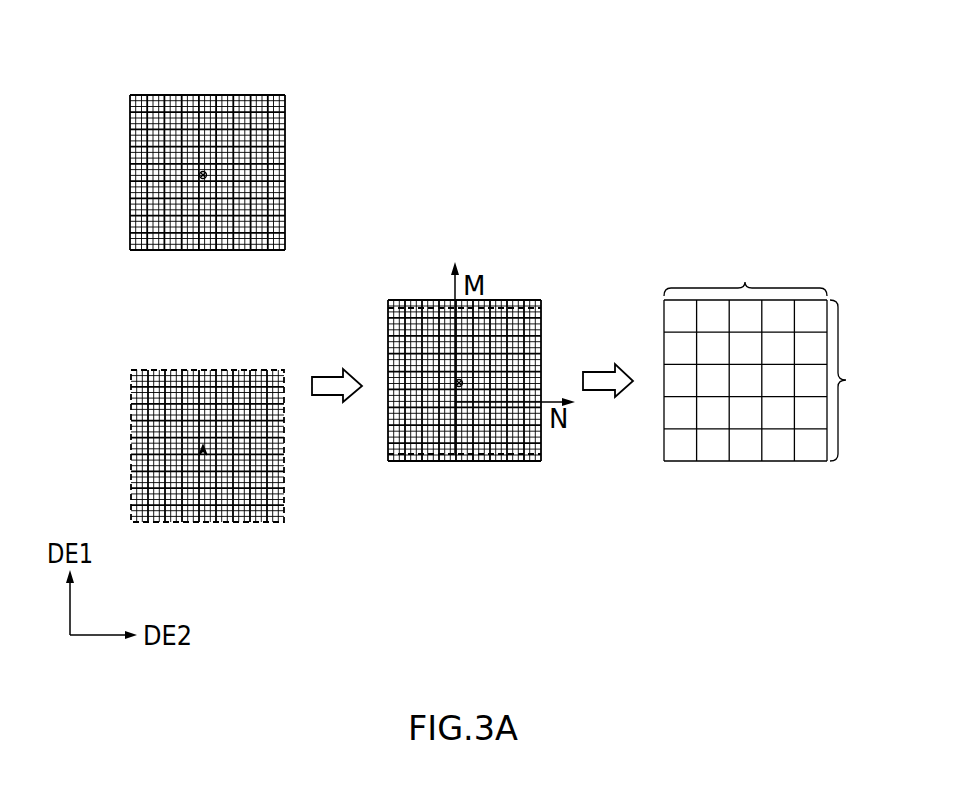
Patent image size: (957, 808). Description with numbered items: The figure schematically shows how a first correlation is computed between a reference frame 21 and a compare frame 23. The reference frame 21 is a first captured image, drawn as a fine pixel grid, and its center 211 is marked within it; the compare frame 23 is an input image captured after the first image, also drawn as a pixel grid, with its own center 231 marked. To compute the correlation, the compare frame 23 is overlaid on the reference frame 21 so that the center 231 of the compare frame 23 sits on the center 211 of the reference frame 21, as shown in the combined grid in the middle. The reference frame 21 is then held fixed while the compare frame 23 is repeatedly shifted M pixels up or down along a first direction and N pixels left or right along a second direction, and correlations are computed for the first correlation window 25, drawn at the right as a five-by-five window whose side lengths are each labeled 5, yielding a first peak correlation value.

The reference frame 21 is at (150, 93).
The center of the reference frame 211 is at (204, 172).
The compare frame 23 is at (150, 368).
The center of the compare frame 231 is at (204, 449).
The first correlation window 25 is at (745, 462).
The array dimension 5 is at (745, 282).